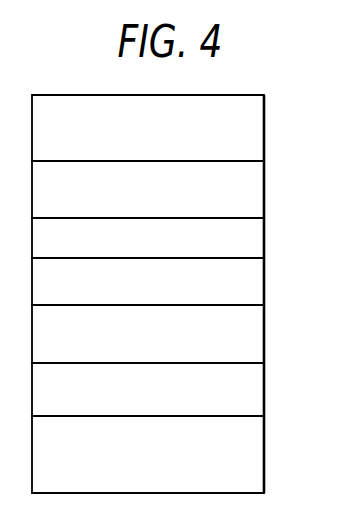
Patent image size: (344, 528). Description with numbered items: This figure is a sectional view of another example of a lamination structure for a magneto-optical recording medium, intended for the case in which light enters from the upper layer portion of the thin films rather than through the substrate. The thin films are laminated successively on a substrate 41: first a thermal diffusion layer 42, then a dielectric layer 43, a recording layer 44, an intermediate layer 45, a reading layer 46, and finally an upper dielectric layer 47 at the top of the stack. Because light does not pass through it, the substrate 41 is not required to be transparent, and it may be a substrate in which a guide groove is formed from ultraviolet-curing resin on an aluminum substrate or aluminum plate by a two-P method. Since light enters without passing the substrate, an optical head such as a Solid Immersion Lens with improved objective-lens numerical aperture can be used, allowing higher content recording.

The substrate 41 is at (168, 454).
The thermal diffusion layer 42 is at (168, 389).
The dielectric layer 43 is at (168, 334).
The recording layer 44 is at (168, 281).
The intermediate layer 45 is at (168, 238).
The reading layer 46 is at (168, 189).
The dielectric layer 47 is at (168, 128).